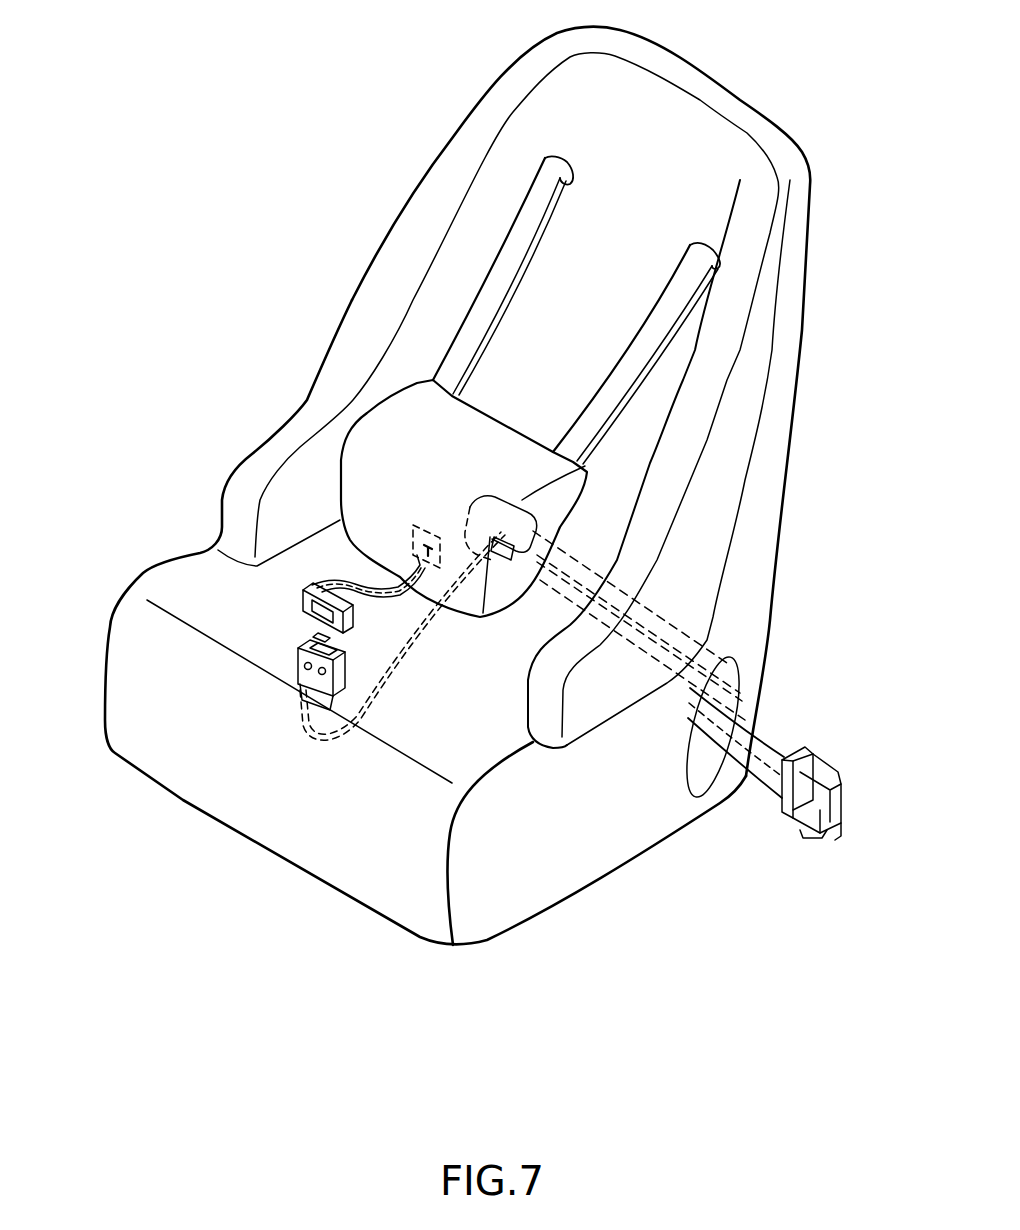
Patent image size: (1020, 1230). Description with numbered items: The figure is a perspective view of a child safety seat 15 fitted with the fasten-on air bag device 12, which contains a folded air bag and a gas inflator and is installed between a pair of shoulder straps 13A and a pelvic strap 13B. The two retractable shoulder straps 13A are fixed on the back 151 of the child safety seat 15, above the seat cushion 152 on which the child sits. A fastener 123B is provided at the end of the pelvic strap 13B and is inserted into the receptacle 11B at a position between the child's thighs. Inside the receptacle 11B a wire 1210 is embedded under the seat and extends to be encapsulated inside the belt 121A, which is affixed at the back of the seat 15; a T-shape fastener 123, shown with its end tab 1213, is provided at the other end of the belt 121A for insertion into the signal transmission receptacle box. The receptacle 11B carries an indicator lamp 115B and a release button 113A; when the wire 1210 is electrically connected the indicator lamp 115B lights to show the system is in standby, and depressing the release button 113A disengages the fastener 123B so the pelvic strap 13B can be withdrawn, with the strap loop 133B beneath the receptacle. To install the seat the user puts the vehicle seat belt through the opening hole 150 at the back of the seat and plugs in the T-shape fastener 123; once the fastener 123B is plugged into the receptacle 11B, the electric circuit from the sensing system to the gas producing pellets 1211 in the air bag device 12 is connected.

The child safety seat 15 is at (703, 77).
The back 151 is at (727, 153).
The seat cushion 152 is at (497, 740).
The shoulder straps 13A is at (520, 225).
The pelvic strap 13B is at (328, 575).
The fasten-on air bag device 12 is at (518, 406).
The gas producing pellets 1211 is at (413, 527).
The wire 1210 is at (355, 575).
The belt 121A is at (670, 640).
The opening hole 150 is at (717, 680).
The T-shape fastener 123 is at (827, 767).
The connector hook 1213 is at (840, 840).
The fastener 123B is at (313, 627).
The receptacle 11B is at (333, 637).
The release button 113A is at (307, 663).
The indicator lamp 115B is at (300, 683).
The strap loop 133B is at (327, 700).